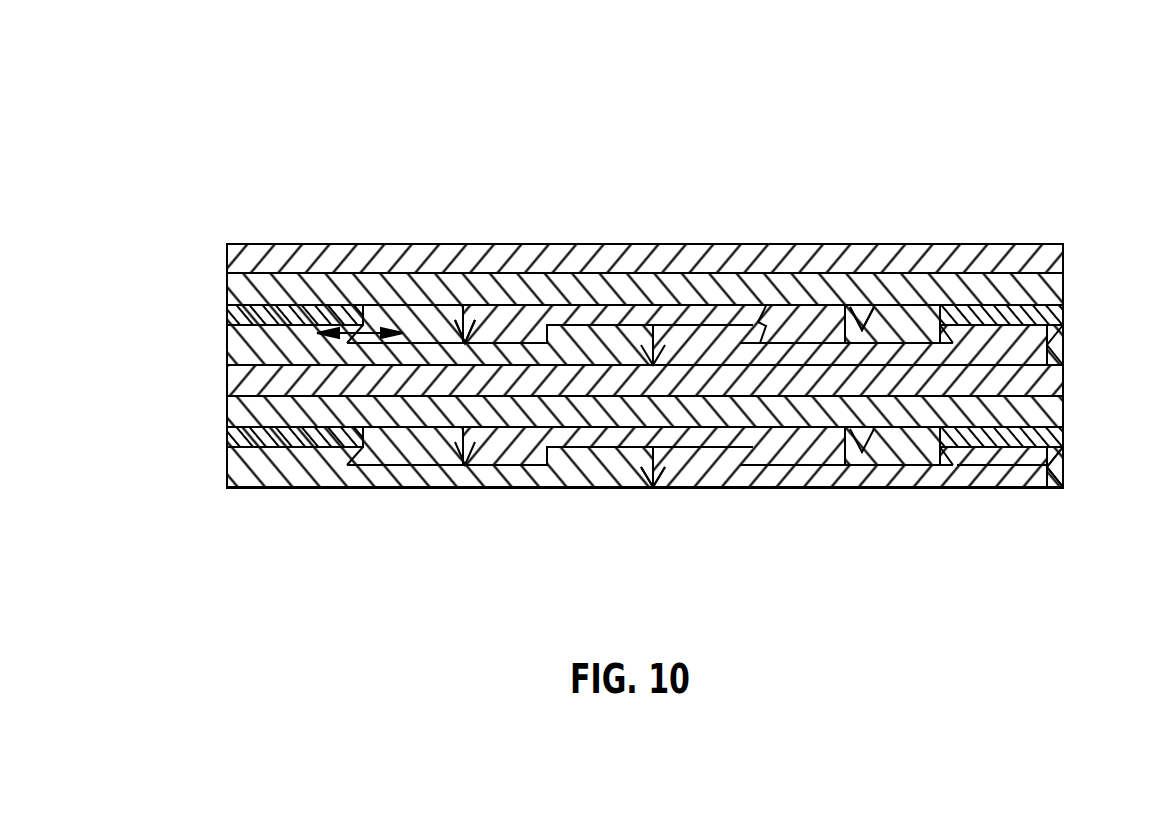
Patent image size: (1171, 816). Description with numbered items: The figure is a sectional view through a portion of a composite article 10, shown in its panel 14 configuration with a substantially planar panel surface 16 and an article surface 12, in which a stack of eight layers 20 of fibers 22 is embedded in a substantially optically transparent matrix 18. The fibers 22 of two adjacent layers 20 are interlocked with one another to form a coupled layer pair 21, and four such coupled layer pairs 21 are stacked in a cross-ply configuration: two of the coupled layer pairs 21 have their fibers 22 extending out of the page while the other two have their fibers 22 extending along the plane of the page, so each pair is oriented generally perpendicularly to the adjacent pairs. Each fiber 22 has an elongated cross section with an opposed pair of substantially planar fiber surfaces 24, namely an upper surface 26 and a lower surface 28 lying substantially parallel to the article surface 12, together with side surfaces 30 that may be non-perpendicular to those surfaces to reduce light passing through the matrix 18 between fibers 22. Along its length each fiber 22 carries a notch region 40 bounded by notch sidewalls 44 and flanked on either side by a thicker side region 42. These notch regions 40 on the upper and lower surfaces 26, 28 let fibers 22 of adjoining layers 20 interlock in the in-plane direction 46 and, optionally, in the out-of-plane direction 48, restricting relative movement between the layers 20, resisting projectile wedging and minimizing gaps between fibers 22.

The composite article 10 is at (1058, 245).
The article surface 12 is at (1043, 243).
The panel 14 is at (1029, 92).
The panel surface 16 is at (997, 243).
The matrix 18 is at (1045, 462).
The layer 20 is at (1063, 259).
The coupled layer pair 21 is at (220, 245).
The fiber 22 is at (465, 323).
The fiber surface 24 is at (863, 488).
The upper surface 26 is at (1013, 467).
The lower surface 28 is at (950, 488).
The side surface 30 is at (647, 465).
The notch region 40 is at (907, 322).
The side region 42 is at (708, 320).
The notch sidewall 44 is at (377, 488).
The in-plane direction 46 is at (375, 335).
The out-of-plane direction 48 is at (780, 312).